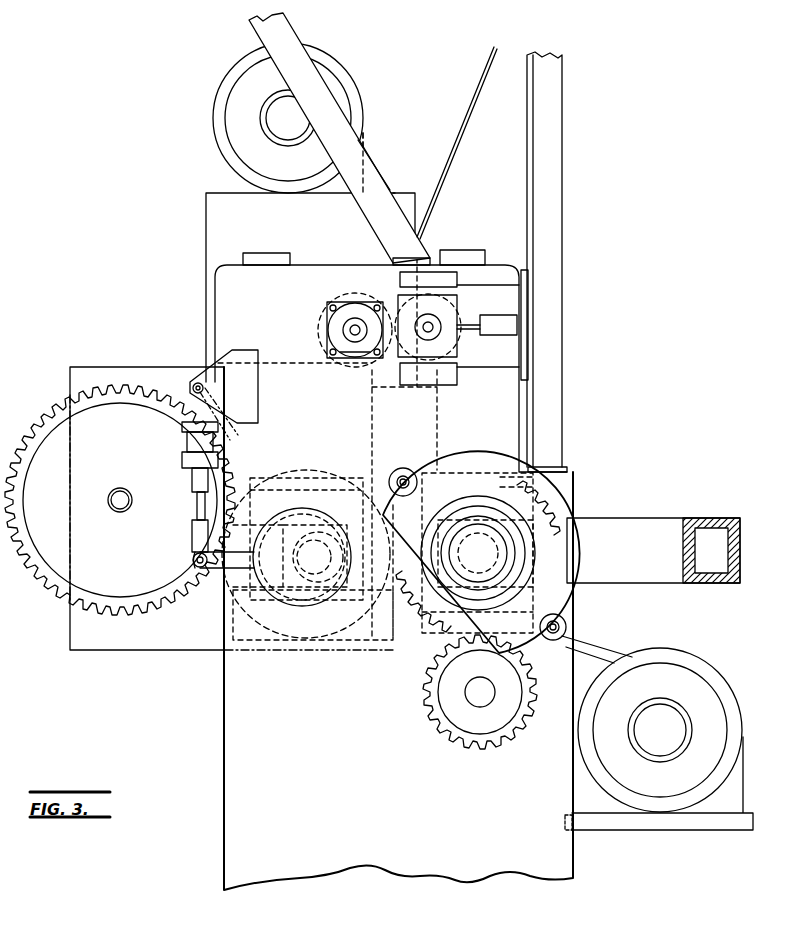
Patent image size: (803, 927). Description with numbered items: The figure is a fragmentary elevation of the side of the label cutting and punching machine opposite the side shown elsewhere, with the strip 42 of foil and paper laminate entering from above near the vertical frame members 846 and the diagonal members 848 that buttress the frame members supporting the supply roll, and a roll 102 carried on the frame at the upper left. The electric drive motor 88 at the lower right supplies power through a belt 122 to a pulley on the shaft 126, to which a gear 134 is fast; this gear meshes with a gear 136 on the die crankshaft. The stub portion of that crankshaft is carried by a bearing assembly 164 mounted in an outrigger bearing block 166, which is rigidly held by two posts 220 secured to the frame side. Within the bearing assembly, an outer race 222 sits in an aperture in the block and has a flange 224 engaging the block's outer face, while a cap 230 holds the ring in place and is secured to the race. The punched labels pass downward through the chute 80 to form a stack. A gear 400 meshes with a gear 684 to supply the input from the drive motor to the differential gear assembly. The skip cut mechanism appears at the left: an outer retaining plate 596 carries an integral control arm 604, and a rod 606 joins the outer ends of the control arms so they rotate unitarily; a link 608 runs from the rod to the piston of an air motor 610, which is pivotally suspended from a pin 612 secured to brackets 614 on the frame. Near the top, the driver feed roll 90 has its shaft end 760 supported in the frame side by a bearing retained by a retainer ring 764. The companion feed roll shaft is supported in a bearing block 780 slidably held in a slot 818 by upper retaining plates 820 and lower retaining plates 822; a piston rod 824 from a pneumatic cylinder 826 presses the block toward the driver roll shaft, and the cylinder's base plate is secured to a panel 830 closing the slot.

The strip 42 is at (467, 113).
The chute 80 is at (638, 527).
The electric drive motor 88 is at (690, 665).
The driver feed roll 90 is at (336, 300).
The supply roll 102 is at (240, 117).
The belt 122 is at (600, 650).
The shaft 126 is at (488, 700).
The gear 134 is at (440, 730).
The gear 136 is at (424, 620).
The bearing assembly 164 is at (505, 527).
The outrigger bearing block 166 is at (440, 460).
The posts 220 is at (402, 475).
The outer race 222 is at (512, 567).
The flange 224 is at (522, 549).
The cap 230 is at (487, 580).
The gear 400 is at (236, 642).
The outer retaining plate 596 is at (300, 605).
The control arm 604 is at (238, 566).
The rod 606 is at (194, 560).
The link 608 is at (196, 510).
The air motor 610 is at (190, 447).
The pin 612 is at (197, 384).
The brackets 614 is at (248, 401).
The gear 684 is at (48, 580).
The shaft end 760 is at (350, 328).
The retainer ring 764 is at (348, 348).
The bearing block 780 is at (428, 318).
The slot 818 is at (510, 297).
The upper retaining plates 820 is at (443, 282).
The lower retaining plates 822 is at (447, 380).
The piston rod 824 is at (469, 332).
The pneumatic cylinder 826 is at (510, 320).
The panel 830 is at (522, 355).
The vertical frame members 846 is at (548, 120).
The diagonal members 848 is at (282, 34).